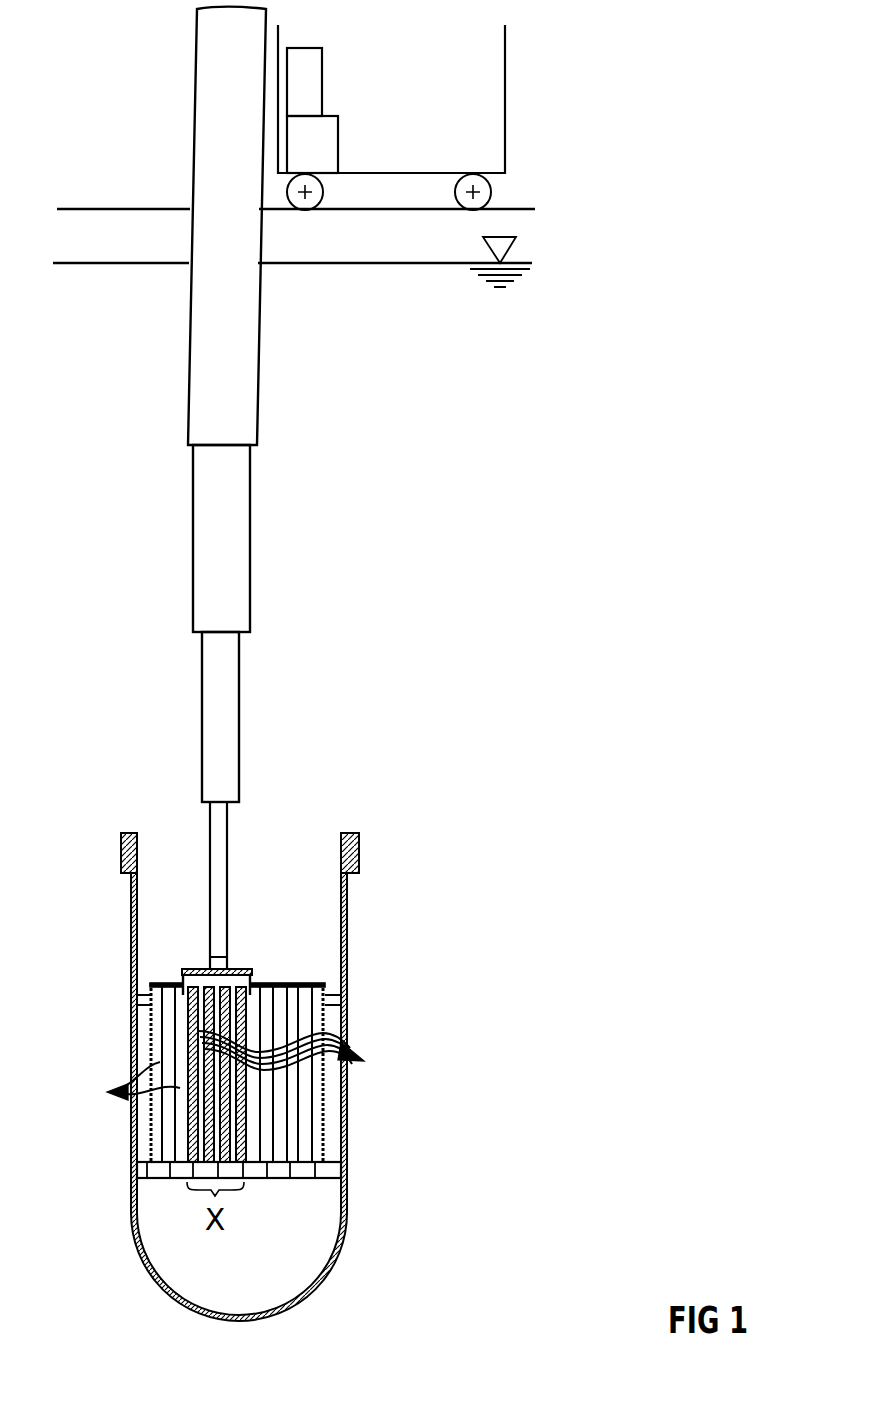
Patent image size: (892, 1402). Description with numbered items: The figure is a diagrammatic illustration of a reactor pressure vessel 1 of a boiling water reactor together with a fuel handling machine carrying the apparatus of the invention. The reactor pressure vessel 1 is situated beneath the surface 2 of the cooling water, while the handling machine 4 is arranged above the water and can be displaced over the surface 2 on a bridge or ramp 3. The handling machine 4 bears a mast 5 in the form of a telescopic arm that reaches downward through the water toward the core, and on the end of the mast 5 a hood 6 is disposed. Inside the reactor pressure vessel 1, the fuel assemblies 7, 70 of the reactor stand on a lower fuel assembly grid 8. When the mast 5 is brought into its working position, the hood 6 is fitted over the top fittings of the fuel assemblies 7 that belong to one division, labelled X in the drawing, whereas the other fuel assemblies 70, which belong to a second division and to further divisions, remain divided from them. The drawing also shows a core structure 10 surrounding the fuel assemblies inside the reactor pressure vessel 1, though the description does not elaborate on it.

The reactor pressure vessel 1 is at (348, 905).
The surface of cooling water 2 is at (506, 240).
The bridge or ramp 3 is at (101, 209).
The handling machine 4 is at (318, 142).
The mast 5 is at (218, 713).
The hood 6 is at (243, 968).
The fuel assemblies 7 is at (292, 1054).
The lower fuel assembly grid 8 is at (277, 1172).
The core shroud 10 is at (343, 997).
The fuel assemblies 70 is at (121, 1087).